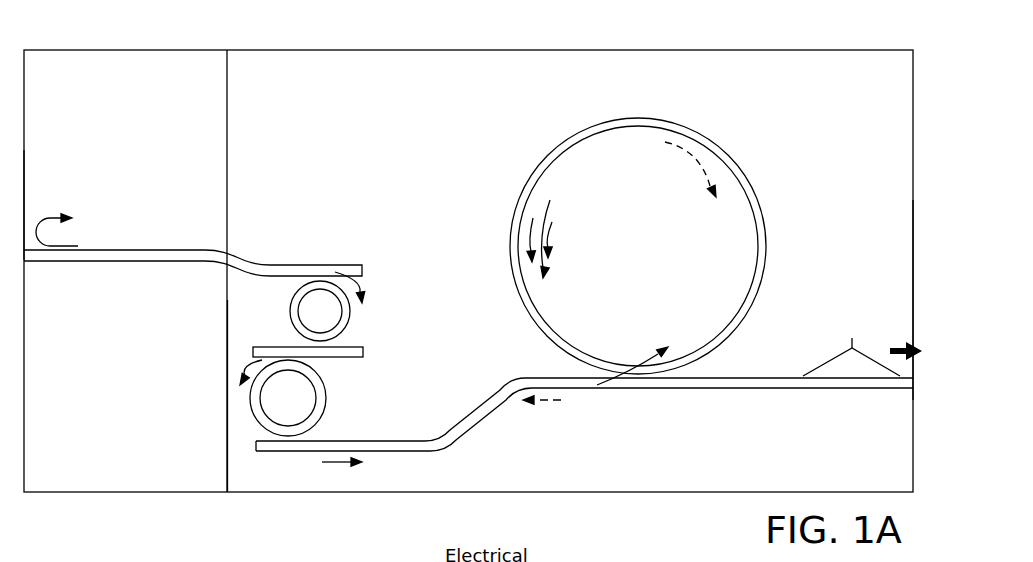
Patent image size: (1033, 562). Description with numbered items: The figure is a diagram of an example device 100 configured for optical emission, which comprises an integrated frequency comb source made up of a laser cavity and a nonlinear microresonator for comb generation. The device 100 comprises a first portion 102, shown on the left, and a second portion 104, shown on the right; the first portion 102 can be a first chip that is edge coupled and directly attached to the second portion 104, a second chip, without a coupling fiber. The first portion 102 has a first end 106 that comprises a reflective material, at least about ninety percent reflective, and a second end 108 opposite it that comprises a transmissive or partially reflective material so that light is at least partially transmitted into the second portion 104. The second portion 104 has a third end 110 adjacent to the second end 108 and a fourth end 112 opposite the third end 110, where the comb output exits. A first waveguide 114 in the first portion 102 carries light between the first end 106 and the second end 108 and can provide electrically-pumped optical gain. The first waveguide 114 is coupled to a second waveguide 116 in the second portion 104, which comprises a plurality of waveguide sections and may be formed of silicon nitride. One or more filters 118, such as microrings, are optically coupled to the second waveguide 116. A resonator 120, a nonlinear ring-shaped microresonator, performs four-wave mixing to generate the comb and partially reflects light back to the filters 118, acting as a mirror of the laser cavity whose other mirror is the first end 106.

The device 100 is at (876, 34).
The first portion 102 is at (146, 76).
The second portion 104 is at (306, 76).
The first end 106 is at (30, 176).
The second end 108 is at (217, 481).
The third end 110 is at (239, 481).
The fourth end 112 is at (910, 216).
The first waveguide 114 is at (179, 272).
The second waveguide 116 is at (307, 255).
The filters 118 is at (350, 326).
The resonator 120 is at (737, 165).